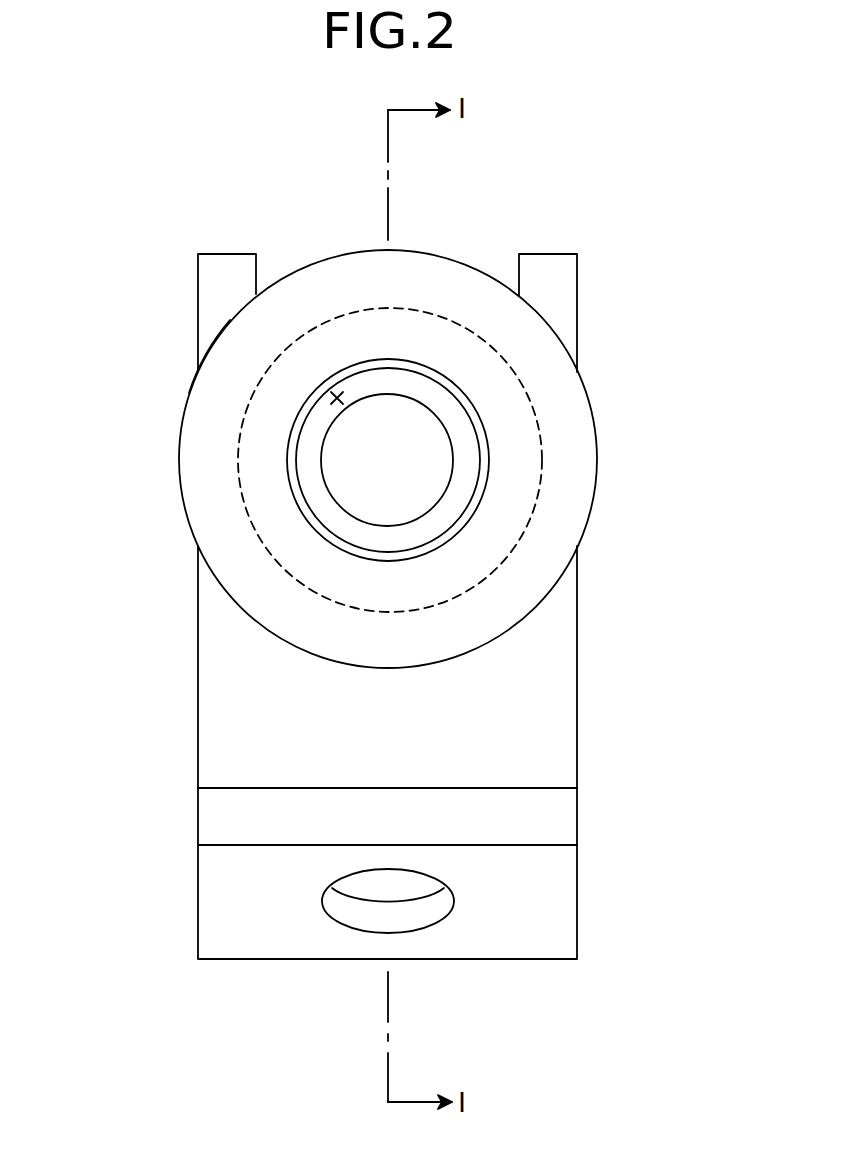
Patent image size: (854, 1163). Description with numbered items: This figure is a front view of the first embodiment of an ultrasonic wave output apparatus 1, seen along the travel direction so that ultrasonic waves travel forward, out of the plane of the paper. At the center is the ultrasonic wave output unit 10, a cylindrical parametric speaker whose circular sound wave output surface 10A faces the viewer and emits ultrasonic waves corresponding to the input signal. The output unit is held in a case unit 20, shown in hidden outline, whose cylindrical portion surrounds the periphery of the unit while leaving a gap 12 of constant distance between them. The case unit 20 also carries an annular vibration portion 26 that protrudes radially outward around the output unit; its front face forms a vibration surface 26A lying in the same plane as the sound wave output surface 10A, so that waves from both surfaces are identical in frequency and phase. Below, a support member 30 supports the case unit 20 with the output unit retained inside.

The ultrasonic wave output apparatus 1 is at (633, 203).
The ultrasonic wave output unit 10 is at (403, 458).
The sound wave output surface 10A is at (387, 460).
The gap 12 is at (337, 398).
The case unit 20 is at (387, 333).
The vibration portion 26 is at (178, 460).
The vibration surface 26A is at (212, 412).
The support member 30 is at (492, 688).